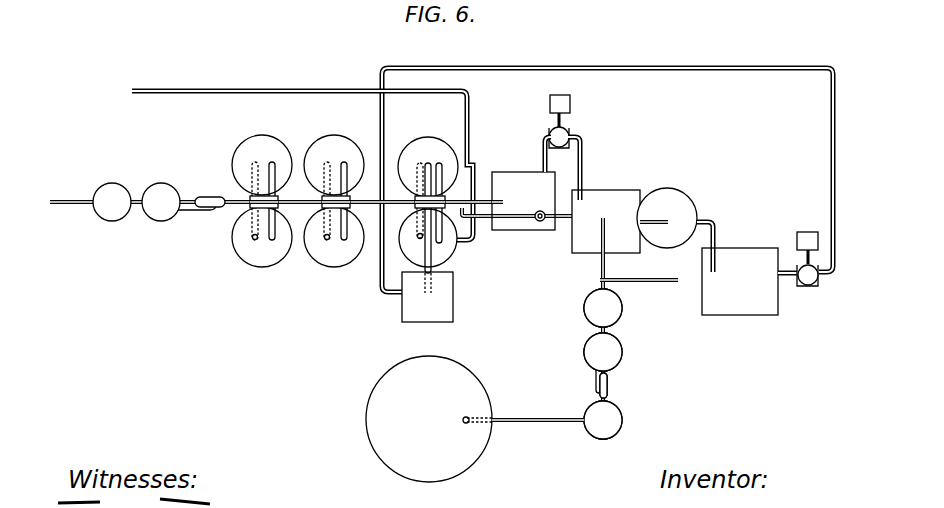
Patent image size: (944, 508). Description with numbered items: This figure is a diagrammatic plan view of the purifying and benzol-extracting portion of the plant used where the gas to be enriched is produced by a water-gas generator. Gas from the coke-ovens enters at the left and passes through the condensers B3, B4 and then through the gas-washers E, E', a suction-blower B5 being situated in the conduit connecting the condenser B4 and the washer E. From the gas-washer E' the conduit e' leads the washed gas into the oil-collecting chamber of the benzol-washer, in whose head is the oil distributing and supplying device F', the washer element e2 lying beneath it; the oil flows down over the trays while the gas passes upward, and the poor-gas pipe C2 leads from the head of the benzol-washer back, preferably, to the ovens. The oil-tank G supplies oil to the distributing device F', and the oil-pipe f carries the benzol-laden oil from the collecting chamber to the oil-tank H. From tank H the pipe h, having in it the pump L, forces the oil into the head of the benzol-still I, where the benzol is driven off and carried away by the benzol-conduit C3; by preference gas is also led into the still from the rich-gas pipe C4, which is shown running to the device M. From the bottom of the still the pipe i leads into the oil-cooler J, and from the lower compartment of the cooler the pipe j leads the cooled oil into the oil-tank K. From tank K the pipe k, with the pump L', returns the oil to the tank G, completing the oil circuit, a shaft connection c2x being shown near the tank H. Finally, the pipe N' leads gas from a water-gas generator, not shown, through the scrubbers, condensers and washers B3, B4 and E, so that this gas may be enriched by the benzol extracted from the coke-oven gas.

The condenser B3 is at (367, 244).
The condenser B4 is at (392, 264).
The suction-blower B5 is at (403, 287).
The gas-washer E is at (432, 282).
The gas-washer E' is at (333, 196).
The oil distributing and supplying device F' is at (428, 215).
The conduit e' is at (419, 211).
The lower wheel e2 is at (443, 266).
The oil-tank G is at (427, 297).
The pipe k is at (550, 68).
The poor-gas pipe C2 is at (257, 89).
The shaft c2x is at (517, 214).
The pump L is at (565, 121).
The pipe h is at (561, 168).
The oil-tank H is at (523, 201).
The oil-pipe f is at (502, 204).
The benzol-still I is at (606, 221).
The pipe i is at (660, 220).
The oil-cooler J is at (667, 218).
The pipe j is at (715, 240).
The oil-tank K is at (749, 281).
The pump L' is at (807, 247).
The benzol-conduit C3 is at (606, 258).
The pipe N' is at (639, 273).
The motor M is at (429, 419).
The rich-gas pipe C4 is at (536, 411).